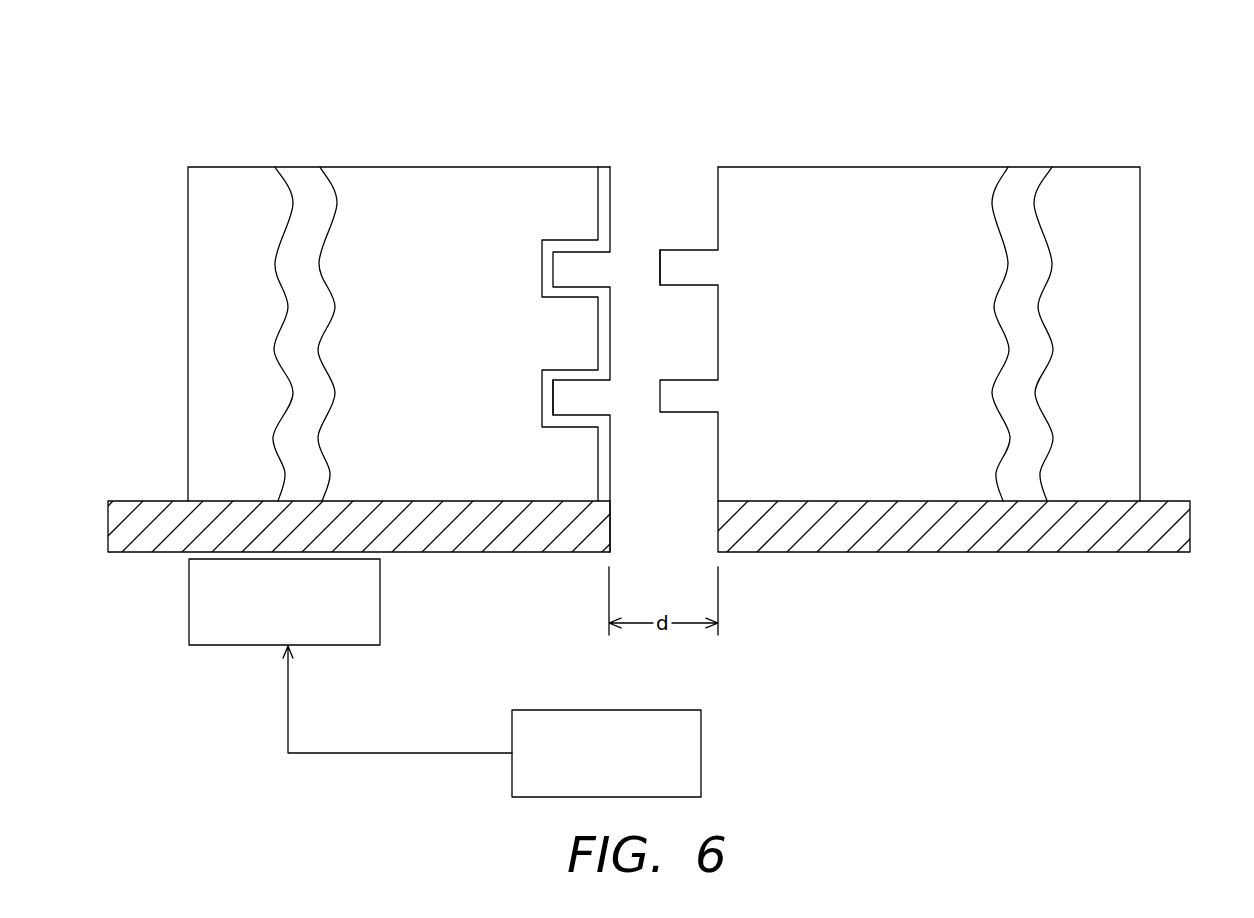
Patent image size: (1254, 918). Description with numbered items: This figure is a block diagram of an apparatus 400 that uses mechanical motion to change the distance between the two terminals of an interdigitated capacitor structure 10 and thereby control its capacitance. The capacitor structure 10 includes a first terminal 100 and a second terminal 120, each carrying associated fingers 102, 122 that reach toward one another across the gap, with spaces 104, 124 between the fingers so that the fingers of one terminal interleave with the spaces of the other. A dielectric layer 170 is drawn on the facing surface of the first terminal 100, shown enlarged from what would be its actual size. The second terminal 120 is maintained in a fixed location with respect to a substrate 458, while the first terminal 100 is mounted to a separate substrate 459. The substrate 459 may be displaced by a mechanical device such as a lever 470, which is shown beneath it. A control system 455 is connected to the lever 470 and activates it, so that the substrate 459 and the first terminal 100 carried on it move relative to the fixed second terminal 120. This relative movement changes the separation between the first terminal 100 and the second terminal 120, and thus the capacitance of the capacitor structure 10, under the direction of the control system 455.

The interdigitated capacitor structure 10 is at (680, 138).
The first terminal 100 is at (445, 335).
The fingers 102 is at (600, 320).
The spaces 104 is at (587, 401).
The second terminal 120 is at (885, 359).
The fingers 122 is at (700, 248).
The spaces 124 is at (698, 432).
The dielectric layer 170 is at (612, 180).
The apparatus 400 is at (1130, 128).
The control system 455 is at (692, 708).
The substrate 458 is at (1047, 553).
The substrate 459 is at (157, 500).
The lever 470 is at (189, 620).